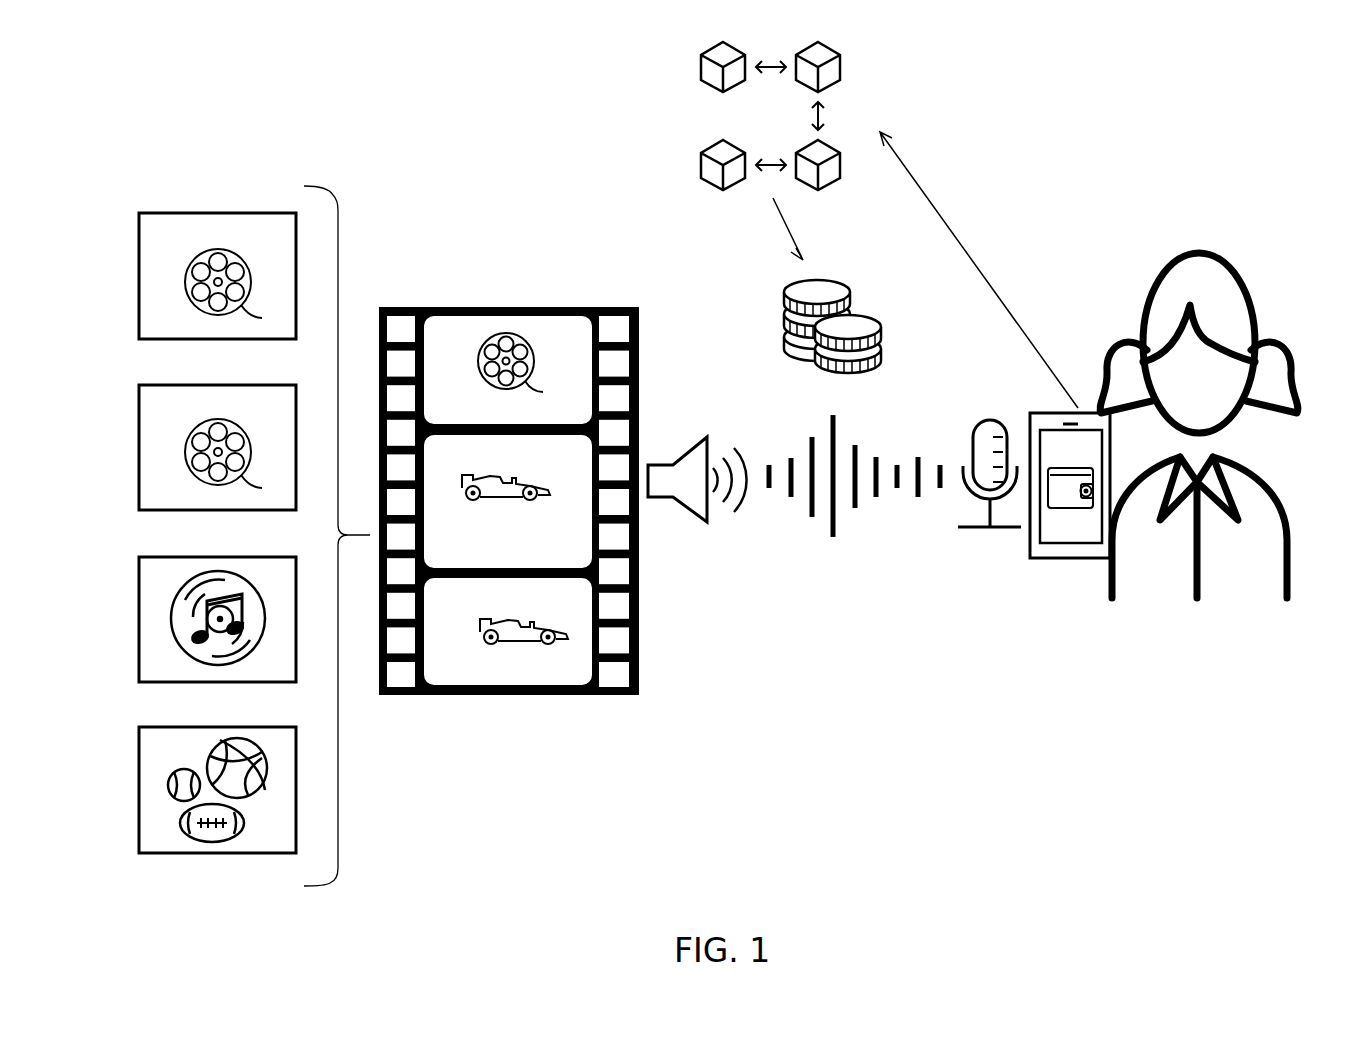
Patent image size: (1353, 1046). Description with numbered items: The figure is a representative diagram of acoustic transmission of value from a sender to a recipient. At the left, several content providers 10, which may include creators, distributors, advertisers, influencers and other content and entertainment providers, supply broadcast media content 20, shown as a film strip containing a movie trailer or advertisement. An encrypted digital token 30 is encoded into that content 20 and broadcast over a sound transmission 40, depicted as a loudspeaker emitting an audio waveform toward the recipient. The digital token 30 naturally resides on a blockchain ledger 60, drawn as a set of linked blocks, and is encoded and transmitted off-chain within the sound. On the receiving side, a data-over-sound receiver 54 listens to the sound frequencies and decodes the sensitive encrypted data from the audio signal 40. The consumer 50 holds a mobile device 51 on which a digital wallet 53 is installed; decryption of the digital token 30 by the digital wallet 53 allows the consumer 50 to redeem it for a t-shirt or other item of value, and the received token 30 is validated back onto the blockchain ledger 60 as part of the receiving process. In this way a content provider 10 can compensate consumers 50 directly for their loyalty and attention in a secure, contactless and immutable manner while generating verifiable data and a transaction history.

The content provider 10 is at (254, 532).
The broadcast media content 20 is at (509, 481).
The digital token 30 is at (810, 326).
The sound transmission 40 is at (795, 499).
The consumer 50 is at (1197, 425).
The mobile device 51 is at (1074, 551).
The digital wallet 53 is at (1062, 497).
The data-over-sound receiver 54 is at (987, 458).
The blockchain ledger 60 is at (889, 225).